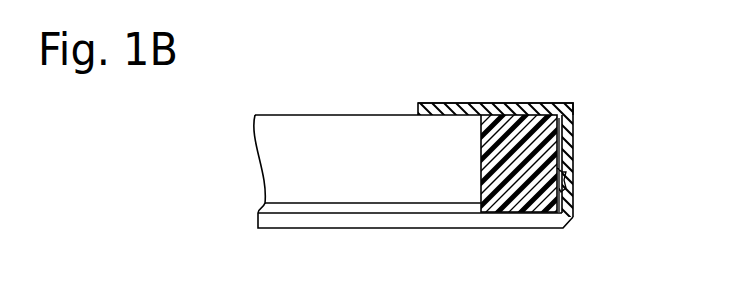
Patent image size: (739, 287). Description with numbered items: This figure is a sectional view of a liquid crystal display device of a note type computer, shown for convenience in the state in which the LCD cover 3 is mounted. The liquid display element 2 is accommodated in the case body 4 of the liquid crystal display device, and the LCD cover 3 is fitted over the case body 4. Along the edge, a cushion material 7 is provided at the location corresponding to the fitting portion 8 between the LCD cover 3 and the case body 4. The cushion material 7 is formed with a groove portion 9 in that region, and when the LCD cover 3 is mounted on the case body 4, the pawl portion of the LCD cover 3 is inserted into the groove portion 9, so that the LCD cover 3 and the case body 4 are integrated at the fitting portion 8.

The liquid display element 2 is at (306, 140).
The LCD cover 3 is at (575, 124).
The case body 4 is at (429, 229).
The cushion material 7 is at (519, 212).
The fitting portion 8 is at (533, 152).
The groove portion 9 is at (573, 103).